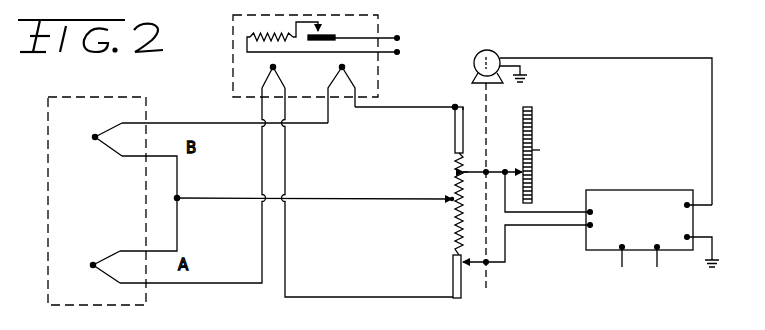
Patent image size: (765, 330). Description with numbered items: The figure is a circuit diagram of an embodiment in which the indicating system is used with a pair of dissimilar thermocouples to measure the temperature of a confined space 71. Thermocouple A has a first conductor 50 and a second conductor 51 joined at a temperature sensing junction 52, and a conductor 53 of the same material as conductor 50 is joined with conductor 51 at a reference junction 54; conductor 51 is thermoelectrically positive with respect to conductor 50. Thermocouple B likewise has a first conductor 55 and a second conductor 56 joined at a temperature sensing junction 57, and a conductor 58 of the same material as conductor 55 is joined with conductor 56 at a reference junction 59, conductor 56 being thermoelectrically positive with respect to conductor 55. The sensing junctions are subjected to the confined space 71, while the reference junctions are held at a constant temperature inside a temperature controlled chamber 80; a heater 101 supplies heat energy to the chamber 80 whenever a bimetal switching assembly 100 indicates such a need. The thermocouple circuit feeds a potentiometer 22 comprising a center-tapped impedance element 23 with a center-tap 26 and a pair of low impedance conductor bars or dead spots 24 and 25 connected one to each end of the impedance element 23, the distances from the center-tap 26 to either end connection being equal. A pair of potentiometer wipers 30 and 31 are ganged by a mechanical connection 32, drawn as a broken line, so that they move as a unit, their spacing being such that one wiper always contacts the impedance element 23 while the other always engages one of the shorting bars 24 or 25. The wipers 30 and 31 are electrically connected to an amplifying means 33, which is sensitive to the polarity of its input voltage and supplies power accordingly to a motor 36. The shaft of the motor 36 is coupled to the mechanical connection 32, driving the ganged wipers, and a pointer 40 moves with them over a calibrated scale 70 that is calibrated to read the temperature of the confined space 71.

The confined space 71 is at (46, 205).
The temperature sensing junction 57 is at (93, 135).
The temperature sensing junction 52 is at (93, 262).
The second conductor 56 is at (163, 123).
The first conductor 55 is at (155, 156).
The first conductor 50 is at (178, 226).
The second conductor 51 is at (180, 284).
The conductor 53 is at (285, 258).
The reference junction 54 is at (280, 65).
The reference junction 59 is at (346, 64).
The conductor 58 is at (398, 107).
The temperature controlled chamber 80 is at (232, 72).
The heater 101 is at (250, 35).
The bimetal switching assembly 100 is at (330, 34).
The potentiometer 22 is at (436, 146).
The low impedance conductor bar 24 is at (463, 108).
The center-tapped impedance element 23 is at (454, 186).
The center-tap 26 is at (450, 206).
The low impedance conductor bar 25 is at (452, 280).
The pointer 40 is at (526, 180).
The potentiometer wiper 30 is at (472, 172).
The potentiometer wiper 31 is at (477, 265).
The mechanical connection 32 is at (486, 105).
The motor 36 is at (489, 50).
The calibrated scale 70 is at (532, 118).
The amplifying means 33 is at (633, 190).